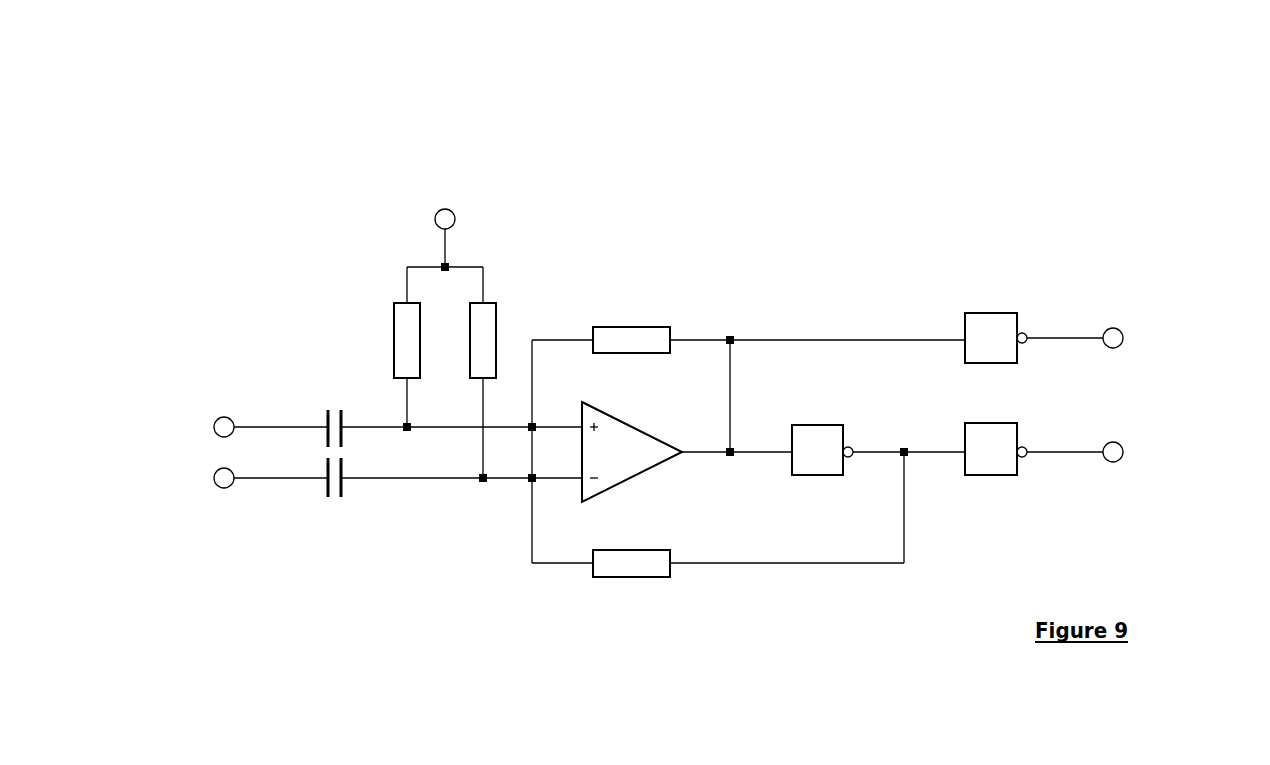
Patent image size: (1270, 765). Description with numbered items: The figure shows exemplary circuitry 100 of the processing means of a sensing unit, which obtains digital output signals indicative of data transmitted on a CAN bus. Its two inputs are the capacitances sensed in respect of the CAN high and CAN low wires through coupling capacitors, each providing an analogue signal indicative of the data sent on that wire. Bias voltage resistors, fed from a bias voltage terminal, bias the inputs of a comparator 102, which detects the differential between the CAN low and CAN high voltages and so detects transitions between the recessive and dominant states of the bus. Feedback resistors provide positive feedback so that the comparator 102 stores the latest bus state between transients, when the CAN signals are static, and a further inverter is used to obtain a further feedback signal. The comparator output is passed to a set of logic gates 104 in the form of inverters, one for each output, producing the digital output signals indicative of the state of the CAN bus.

The circuitry 100 is at (645, 163).
The comparator 102 is at (573, 498).
The set of logic gates 104 is at (988, 525).